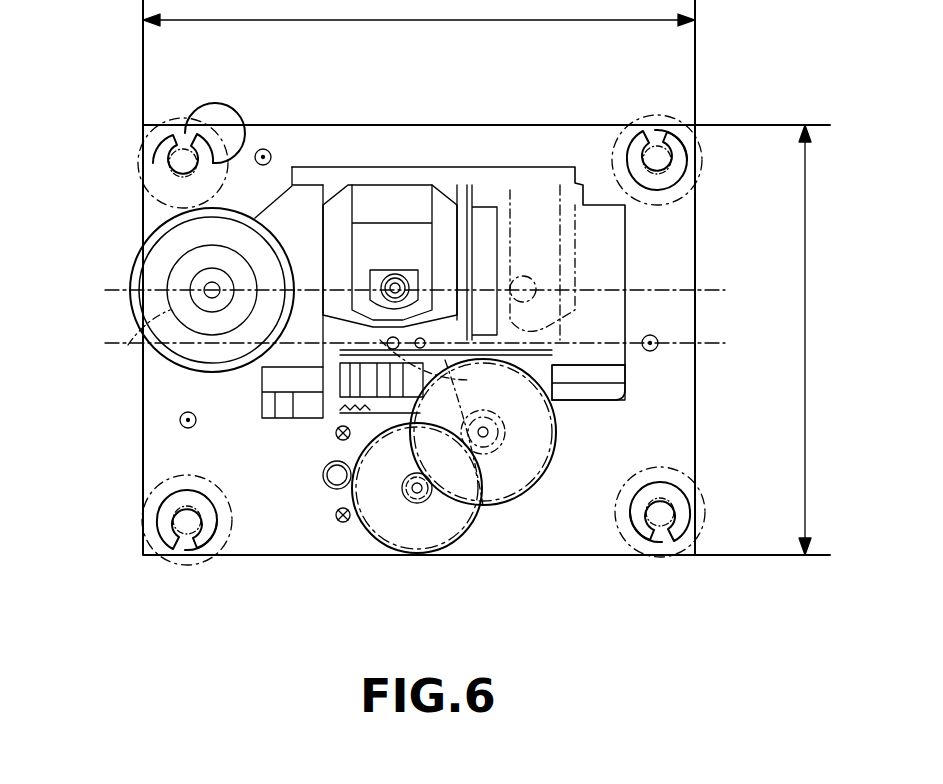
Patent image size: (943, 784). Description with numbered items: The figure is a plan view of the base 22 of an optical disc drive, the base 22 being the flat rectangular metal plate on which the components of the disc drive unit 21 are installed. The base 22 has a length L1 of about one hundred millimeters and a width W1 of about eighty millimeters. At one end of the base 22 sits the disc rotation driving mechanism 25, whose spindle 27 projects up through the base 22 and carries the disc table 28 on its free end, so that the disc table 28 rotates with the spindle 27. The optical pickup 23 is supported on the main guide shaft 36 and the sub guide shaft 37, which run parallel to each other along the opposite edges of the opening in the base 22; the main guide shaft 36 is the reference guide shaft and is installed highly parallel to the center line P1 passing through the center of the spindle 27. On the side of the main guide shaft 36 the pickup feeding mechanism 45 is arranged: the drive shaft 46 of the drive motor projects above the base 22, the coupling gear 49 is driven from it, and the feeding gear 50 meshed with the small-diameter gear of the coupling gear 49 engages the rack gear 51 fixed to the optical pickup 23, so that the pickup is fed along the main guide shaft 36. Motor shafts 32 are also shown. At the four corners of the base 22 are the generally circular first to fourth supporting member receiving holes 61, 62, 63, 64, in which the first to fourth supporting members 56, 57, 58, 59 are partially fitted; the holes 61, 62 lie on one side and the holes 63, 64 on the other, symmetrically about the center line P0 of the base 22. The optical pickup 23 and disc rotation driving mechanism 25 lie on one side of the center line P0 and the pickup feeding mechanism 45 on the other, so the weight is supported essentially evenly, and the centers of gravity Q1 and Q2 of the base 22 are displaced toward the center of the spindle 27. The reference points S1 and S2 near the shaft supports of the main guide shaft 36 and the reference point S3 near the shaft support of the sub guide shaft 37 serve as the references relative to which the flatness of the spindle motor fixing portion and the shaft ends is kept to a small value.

The disc drive unit 21 is at (122, 477).
The base 22 is at (143, 425).
The optical pickup 23 is at (345, 198).
The disc rotation driving mechanism 25 is at (150, 258).
The spindle 27 is at (205, 290).
The disc table 28 is at (172, 352).
The motor shaft gear 32 is at (395, 282).
The main guide shaft 36 is at (597, 385).
The sub guide shaft 37 is at (455, 172).
The pickup feeding mechanism 45 is at (495, 512).
The drive shaft 46 is at (322, 476).
The coupling gear 49 is at (424, 530).
The feeding gear 50 is at (522, 470).
The rack gear 51 is at (338, 412).
The first supporting member 56 is at (228, 150).
The second supporting member 57 is at (628, 138).
The third supporting member 58 is at (226, 545).
The fourth supporting member 59 is at (636, 545).
The first supporting member receiving hole 61 is at (186, 146).
The second supporting member receiving hole 62 is at (680, 126).
The third supporting member receiving hole 63 is at (182, 546).
The fourth supporting member receiving hole 64 is at (668, 545).
The first reference point S1 is at (207, 428).
The second reference point S2 is at (653, 350).
The third reference point S3 is at (268, 152).
The center of gravity Q1 is at (440, 410).
The center of gravity Q2 is at (478, 386).
The center line P0 is at (435, 341).
The center line P1 is at (435, 288).
The length L1 is at (419, 17).
The width W1 is at (806, 340).